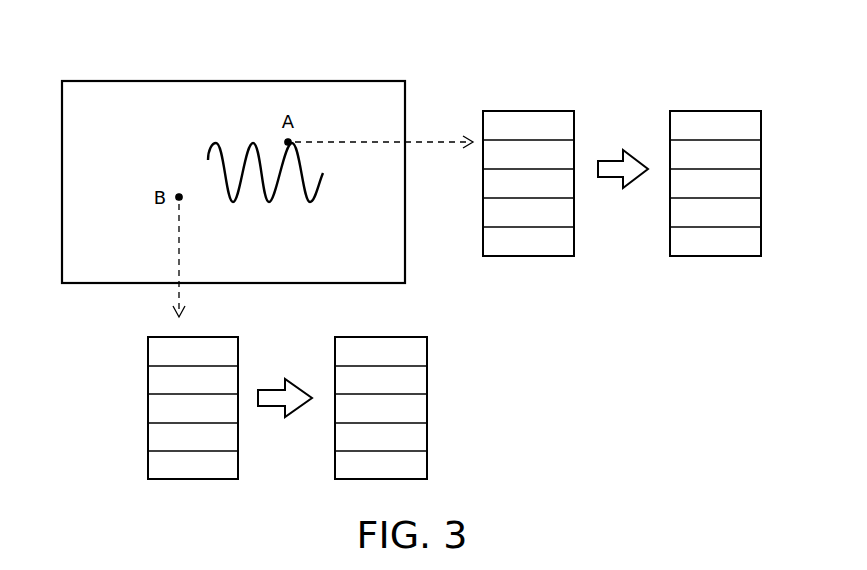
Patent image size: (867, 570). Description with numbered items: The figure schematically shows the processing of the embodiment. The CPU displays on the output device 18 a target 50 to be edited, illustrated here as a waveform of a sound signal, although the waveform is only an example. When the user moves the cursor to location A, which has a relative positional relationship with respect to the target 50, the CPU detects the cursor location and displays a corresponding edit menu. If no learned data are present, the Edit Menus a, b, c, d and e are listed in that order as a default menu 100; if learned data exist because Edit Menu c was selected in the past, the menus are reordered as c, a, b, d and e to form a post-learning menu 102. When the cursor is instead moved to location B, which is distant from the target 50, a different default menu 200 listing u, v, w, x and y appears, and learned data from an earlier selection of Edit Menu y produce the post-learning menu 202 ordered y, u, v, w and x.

The output device 18 is at (343, 81).
The target 50 is at (213, 137).
The default menu 100 is at (547, 111).
The post-learning menu 102 is at (733, 111).
The default menu 200 is at (198, 337).
The post-learning menu 202 is at (385, 337).